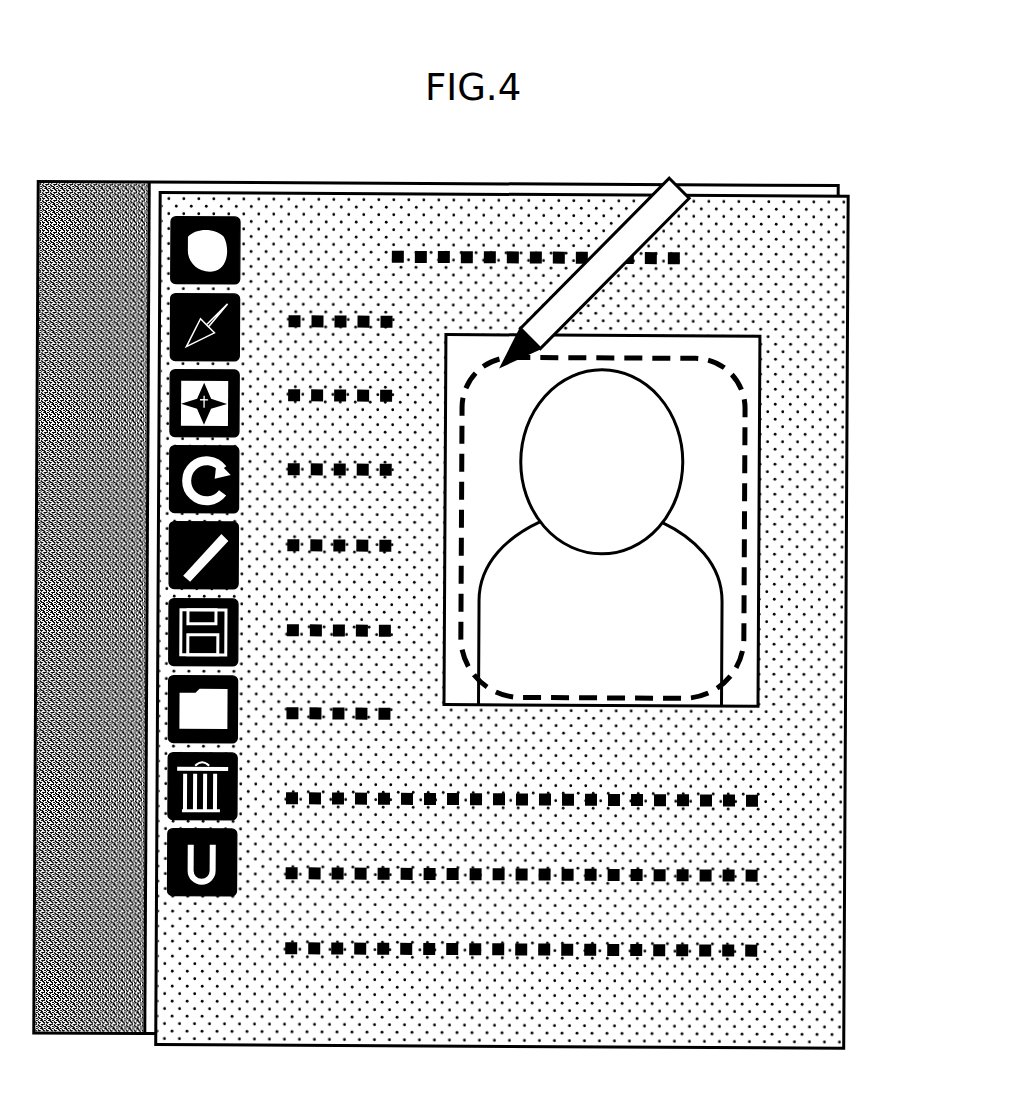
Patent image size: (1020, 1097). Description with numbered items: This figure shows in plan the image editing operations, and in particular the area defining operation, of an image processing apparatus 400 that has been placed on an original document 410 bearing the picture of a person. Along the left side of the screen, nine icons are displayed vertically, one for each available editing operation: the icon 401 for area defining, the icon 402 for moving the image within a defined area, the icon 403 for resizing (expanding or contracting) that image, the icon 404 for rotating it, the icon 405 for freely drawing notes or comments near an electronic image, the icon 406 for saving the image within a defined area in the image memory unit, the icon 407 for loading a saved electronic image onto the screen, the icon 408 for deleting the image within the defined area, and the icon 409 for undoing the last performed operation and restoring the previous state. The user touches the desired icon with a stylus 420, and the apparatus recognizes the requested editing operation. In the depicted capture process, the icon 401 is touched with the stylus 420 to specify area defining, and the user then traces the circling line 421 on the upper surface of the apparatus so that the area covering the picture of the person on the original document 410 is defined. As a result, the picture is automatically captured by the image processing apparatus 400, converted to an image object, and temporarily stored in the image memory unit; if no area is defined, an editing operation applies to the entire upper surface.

The image processing apparatus 400 is at (838, 186).
The original document 410 is at (849, 262).
The icon for area defining 401 is at (238, 240).
The icon for moving operation 402 is at (238, 317).
The icon for resizing operation 403 is at (238, 393).
The icon for rotation operation 404 is at (238, 469).
The icon for drawing operation 405 is at (238, 545).
The icon for saving operation 406 is at (238, 622).
The icon for loading operation 407 is at (238, 699).
The icon for deleting operation 408 is at (238, 776).
The icon for undoing operation 409 is at (238, 852).
The stylus 420 is at (684, 185).
The circling line 421 is at (746, 428).